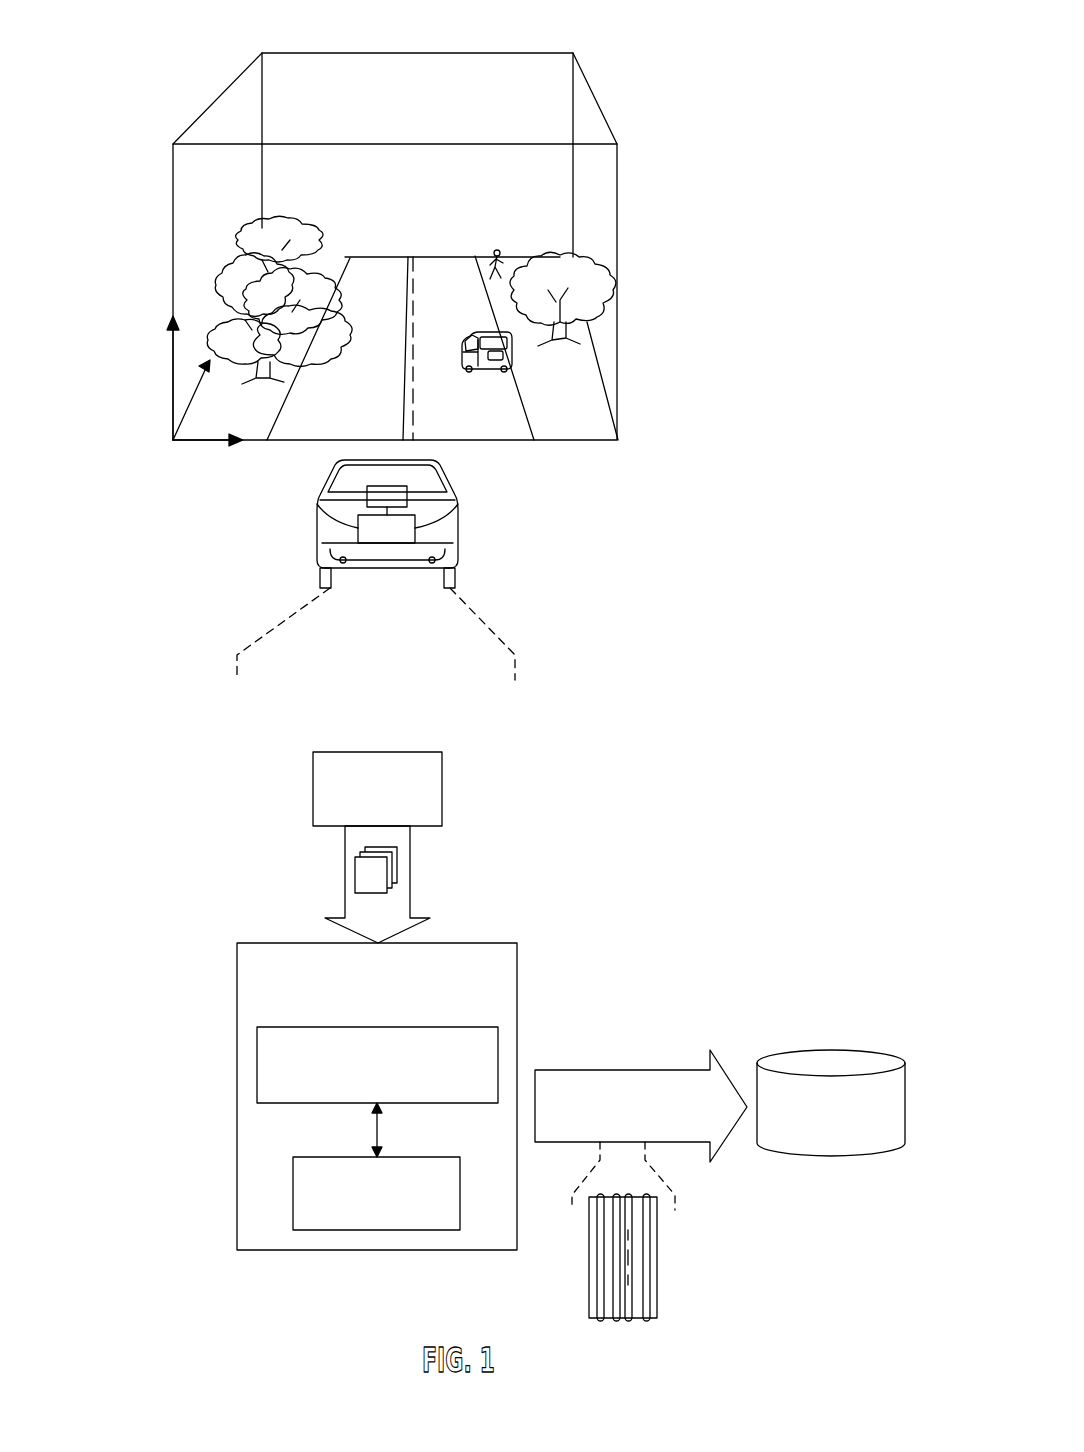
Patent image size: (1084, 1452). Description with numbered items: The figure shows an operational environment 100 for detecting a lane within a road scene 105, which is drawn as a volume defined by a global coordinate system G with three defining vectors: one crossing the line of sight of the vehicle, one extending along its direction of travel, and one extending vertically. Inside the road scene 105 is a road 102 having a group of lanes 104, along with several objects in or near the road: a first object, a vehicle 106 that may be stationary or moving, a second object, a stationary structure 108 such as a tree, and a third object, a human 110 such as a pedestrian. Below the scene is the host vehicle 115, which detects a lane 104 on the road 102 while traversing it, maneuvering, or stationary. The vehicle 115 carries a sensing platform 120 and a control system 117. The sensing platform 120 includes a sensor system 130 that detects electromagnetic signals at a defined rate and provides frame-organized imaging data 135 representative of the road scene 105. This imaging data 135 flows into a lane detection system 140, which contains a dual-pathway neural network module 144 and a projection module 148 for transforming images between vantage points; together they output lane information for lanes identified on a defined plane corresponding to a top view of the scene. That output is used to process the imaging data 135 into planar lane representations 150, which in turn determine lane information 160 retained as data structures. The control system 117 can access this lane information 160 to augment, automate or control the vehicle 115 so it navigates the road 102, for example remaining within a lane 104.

The operational environment 100 is at (176, 26).
The road 102 is at (364, 429).
The lanes 104 is at (383, 268).
The road scene 105 is at (597, 106).
The vehicle 106 is at (513, 350).
The stationary structure 108 is at (585, 265).
The human 110 is at (500, 250).
The vehicle 115 is at (443, 483).
The control system 117 is at (407, 503).
The sensing platform 120 is at (370, 528).
The sensor system 130 is at (380, 752).
The imaging data 135 is at (410, 862).
The lane detection system 140 is at (305, 943).
The dual-pathway neural network module 144 is at (325, 1027).
The projection module 148 is at (363, 1157).
The planar lane representations 150 is at (601, 1070).
The lane information 160 is at (832, 1050).